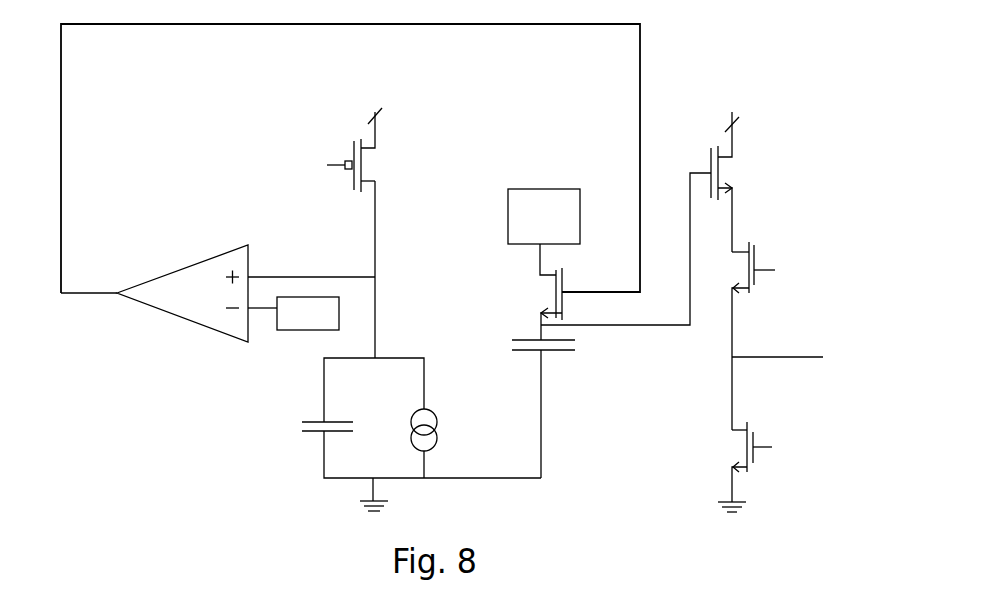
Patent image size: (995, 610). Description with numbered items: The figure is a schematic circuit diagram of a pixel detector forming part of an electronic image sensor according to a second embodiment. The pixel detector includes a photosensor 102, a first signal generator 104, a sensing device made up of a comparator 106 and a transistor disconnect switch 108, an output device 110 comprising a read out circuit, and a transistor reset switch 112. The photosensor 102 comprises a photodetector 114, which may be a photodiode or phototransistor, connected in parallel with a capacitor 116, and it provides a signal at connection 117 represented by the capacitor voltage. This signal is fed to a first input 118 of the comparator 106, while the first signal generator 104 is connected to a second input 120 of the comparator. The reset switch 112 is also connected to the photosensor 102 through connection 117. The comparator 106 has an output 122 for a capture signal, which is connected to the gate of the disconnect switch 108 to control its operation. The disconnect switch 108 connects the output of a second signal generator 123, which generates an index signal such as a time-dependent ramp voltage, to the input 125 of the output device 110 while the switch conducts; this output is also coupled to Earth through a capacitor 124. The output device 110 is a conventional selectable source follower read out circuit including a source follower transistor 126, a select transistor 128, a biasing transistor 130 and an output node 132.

The photosensor 102 is at (400, 350).
The first signal generator 104 is at (308, 330).
The comparator 106 is at (160, 298).
The transistor disconnect switch 108 is at (567, 277).
The output device 110 is at (805, 152).
The transistor reset switch 112 is at (354, 150).
The photodetector 114 is at (433, 432).
The capacitor 116 is at (308, 432).
The connection 117 is at (375, 277).
The first input 118 is at (272, 277).
The second input 120 is at (265, 308).
The output 122 is at (88, 293).
The second signal generator 123 is at (520, 189).
The capacitor 124 is at (552, 350).
The input 125 is at (647, 325).
The source follower transistor 126 is at (712, 150).
The select transistor 128 is at (755, 246).
The biasing transistor 130 is at (752, 427).
The output node 132 is at (793, 357).